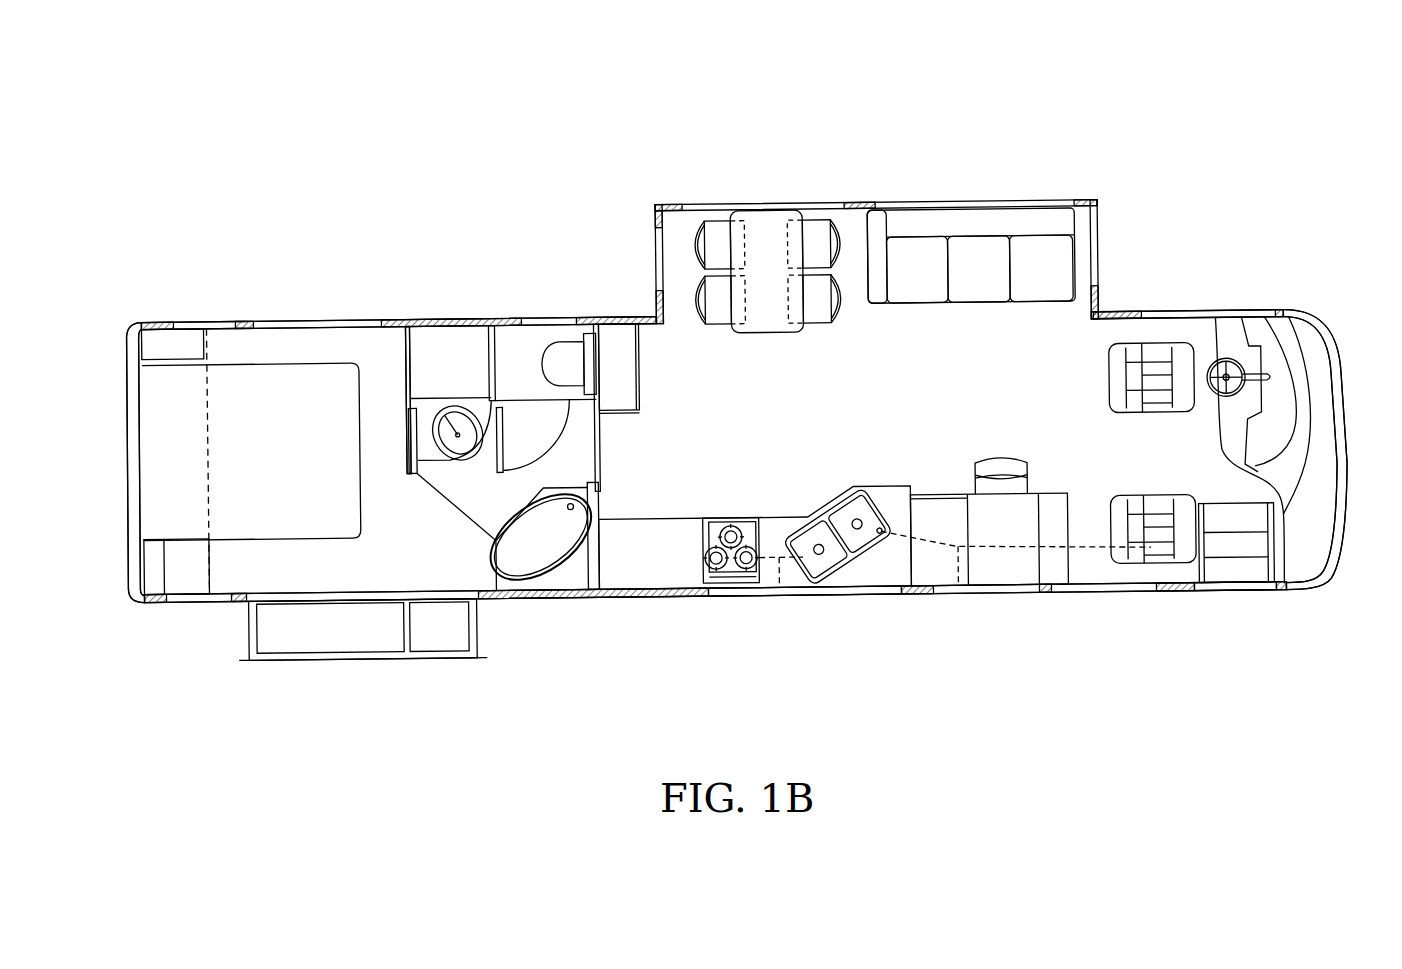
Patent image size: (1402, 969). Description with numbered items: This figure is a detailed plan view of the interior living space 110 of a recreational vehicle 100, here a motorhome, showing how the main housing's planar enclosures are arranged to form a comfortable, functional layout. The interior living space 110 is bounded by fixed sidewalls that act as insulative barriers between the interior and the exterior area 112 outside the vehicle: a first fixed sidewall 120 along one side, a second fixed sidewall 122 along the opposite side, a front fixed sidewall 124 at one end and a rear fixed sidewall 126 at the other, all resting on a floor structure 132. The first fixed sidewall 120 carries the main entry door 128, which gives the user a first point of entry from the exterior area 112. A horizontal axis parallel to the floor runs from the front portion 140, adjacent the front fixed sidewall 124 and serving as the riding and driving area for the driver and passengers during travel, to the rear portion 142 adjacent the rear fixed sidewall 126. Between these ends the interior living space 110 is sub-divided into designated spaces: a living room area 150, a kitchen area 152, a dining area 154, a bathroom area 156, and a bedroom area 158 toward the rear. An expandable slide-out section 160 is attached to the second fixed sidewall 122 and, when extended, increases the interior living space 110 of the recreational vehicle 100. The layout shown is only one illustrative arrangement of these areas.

The recreational vehicle 100 is at (1232, 146).
The interior living space 110 is at (914, 455).
The exterior area 112 is at (482, 255).
The first fixed sidewall 120 is at (623, 602).
The second fixed sidewall 122 is at (410, 327).
The front fixed sidewall 124 is at (1350, 485).
The rear fixed sidewall 126 is at (113, 379).
The main entry door 128 is at (1223, 592).
The floor structure 132 is at (1066, 361).
The front portion 140 is at (1198, 464).
The rear portion 142 is at (171, 473).
The living room area 150 is at (965, 324).
The kitchen area 152 is at (716, 459).
The dining area 154 is at (687, 331).
The bathroom area 156 is at (478, 493).
The bedroom area 158 is at (262, 348).
The expandable slide-out section 160 is at (865, 196).